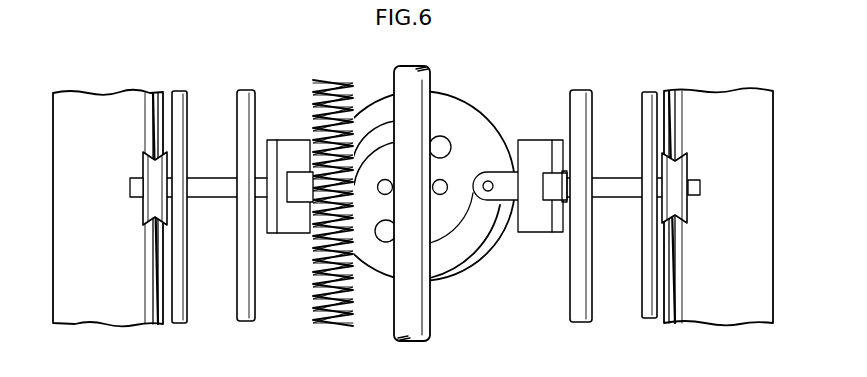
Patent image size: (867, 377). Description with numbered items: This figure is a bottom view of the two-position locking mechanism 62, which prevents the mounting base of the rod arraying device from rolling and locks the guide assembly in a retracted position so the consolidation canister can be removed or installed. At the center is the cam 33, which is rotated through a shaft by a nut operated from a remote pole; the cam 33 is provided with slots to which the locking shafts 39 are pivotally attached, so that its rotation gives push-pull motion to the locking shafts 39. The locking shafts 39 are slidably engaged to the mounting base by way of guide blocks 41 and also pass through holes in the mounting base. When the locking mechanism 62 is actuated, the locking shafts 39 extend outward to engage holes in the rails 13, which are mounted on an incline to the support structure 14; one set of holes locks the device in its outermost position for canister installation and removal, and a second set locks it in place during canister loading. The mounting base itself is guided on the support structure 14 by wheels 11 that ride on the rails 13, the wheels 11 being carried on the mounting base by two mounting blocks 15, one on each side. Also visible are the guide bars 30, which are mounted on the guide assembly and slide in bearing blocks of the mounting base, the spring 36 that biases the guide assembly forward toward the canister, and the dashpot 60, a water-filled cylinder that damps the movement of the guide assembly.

The wheels 11 is at (143, 163).
The rails 13 is at (148, 243).
The support structure 14 is at (115, 92).
The mounting blocks 15 is at (182, 323).
The guide bars 30 is at (240, 250).
The cam 33 is at (460, 118).
The spring 36 is at (330, 85).
The locking shafts 39 is at (213, 185).
The guide blocks 41 is at (277, 230).
The dashpot 60 is at (417, 80).
The two-position locking mechanism 62 is at (462, 292).